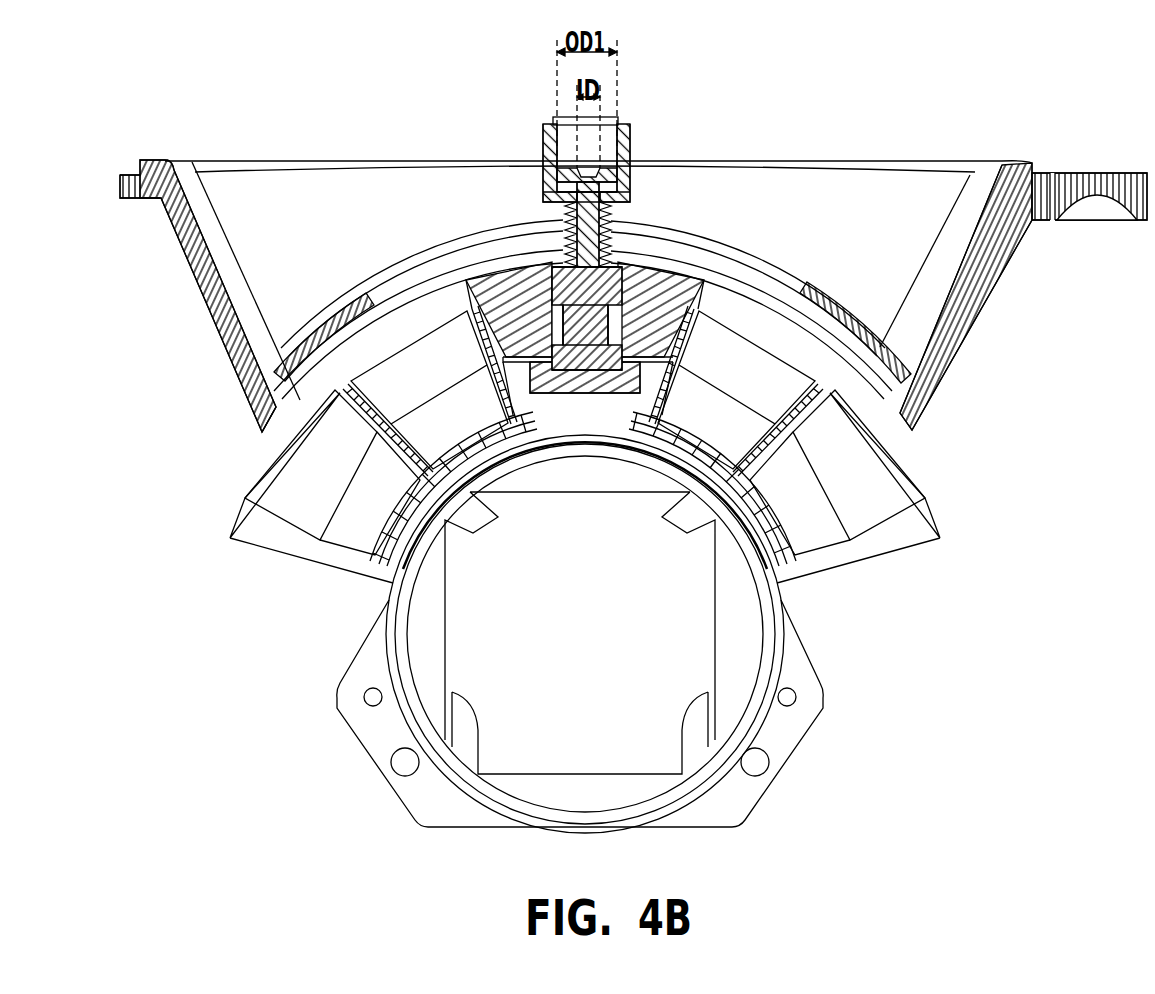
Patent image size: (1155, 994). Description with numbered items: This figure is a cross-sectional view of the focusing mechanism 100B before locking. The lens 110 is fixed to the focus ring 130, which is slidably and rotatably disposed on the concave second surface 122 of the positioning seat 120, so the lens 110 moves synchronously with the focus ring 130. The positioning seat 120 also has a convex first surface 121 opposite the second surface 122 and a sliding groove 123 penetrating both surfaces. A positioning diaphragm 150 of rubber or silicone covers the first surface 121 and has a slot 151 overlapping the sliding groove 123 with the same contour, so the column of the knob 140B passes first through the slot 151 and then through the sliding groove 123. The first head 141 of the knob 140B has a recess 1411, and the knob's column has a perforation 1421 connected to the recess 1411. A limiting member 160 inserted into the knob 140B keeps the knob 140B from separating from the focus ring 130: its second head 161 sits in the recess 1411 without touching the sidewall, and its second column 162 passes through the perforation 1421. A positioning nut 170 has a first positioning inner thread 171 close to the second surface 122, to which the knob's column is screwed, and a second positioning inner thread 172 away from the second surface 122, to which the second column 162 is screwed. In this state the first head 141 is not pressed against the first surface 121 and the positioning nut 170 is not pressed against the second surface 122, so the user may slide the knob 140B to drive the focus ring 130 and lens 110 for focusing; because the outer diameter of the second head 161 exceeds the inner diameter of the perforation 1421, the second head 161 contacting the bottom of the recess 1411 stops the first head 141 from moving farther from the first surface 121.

The focusing mechanism 100B is at (1147, 876).
The lens 110 is at (700, 626).
The positioning seat 120 is at (955, 322).
The first surface 121 is at (352, 299).
The second surface 122 is at (301, 381).
The sliding groove 123 is at (812, 292).
The focus ring 130 is at (920, 540).
The knob 140B is at (635, 115).
The first head 141 is at (543, 130).
The recess 1411 is at (560, 188).
The perforation 1421 is at (613, 328).
The positioning diaphragm 150 is at (848, 300).
The slot 151 is at (772, 290).
The limiting member 160 is at (667, 197).
The second head 161 is at (628, 170).
The second column 162 is at (611, 232).
The positioning nut 170 is at (620, 332).
The first positioning inner thread 171 is at (548, 270).
The second positioning inner thread 172 is at (600, 367).